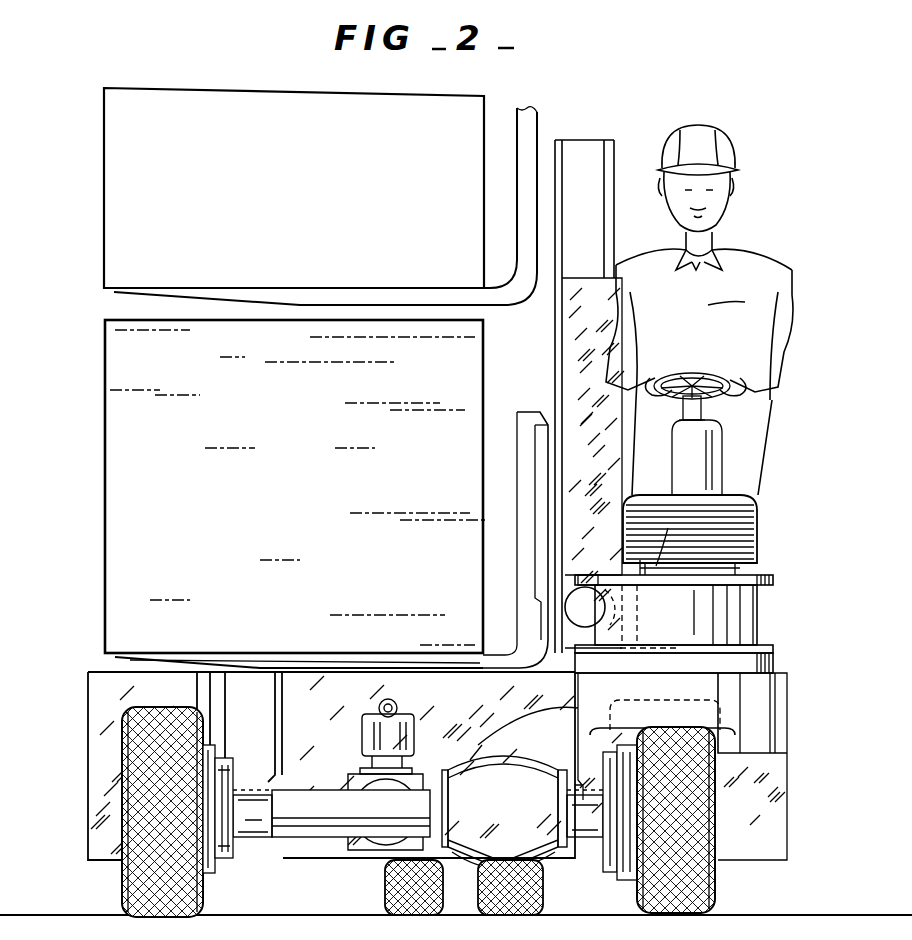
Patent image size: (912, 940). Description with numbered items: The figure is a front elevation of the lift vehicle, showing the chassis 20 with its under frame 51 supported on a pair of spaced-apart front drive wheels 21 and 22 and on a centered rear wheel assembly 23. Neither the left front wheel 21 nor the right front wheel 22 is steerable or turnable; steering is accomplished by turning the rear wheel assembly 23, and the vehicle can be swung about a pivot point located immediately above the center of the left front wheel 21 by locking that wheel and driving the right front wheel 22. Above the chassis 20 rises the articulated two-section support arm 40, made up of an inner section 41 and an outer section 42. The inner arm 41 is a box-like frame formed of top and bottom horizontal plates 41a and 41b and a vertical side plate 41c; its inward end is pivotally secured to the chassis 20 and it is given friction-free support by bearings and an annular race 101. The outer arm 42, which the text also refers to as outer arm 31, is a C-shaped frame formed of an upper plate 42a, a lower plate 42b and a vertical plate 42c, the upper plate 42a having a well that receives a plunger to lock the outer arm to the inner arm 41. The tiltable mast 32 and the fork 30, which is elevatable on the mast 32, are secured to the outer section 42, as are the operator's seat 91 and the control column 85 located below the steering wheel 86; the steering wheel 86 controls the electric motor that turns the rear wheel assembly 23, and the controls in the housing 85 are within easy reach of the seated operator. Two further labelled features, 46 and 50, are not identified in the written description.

The chassis 20 is at (298, 717).
The left front wheel 21 is at (680, 801).
The right front wheel 22 is at (158, 803).
The rear wheel assembly 23 is at (385, 882).
The fork 30 is at (519, 442).
The outer arm 31 is at (404, 668).
The mast 32 is at (604, 406).
The articulated two-section support arm 40 is at (778, 627).
The inner section 41 is at (652, 648).
The top horizontal plate 41a is at (772, 576).
The bottom horizontal plate 41b is at (772, 642).
The vertical side plate 41c is at (676, 615).
The outer section 42 is at (640, 560).
The upper plate 42a is at (668, 528).
The lower plate 42b is at (658, 652).
The vertical plate 42c is at (600, 622).
The pivot 46 is at (590, 578).
The load 50 is at (126, 373).
The under frame 51 is at (770, 697).
The control housing 85 is at (697, 458).
The steering wheel 86 is at (694, 373).
The seat 91 is at (722, 515).
The annular race 101 is at (765, 663).